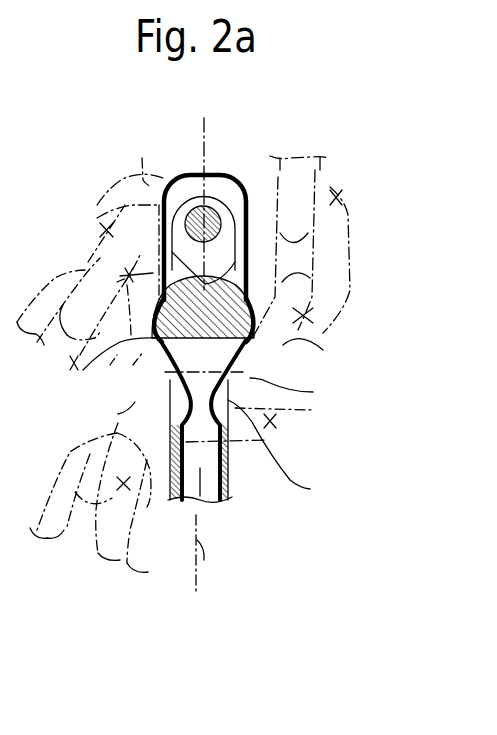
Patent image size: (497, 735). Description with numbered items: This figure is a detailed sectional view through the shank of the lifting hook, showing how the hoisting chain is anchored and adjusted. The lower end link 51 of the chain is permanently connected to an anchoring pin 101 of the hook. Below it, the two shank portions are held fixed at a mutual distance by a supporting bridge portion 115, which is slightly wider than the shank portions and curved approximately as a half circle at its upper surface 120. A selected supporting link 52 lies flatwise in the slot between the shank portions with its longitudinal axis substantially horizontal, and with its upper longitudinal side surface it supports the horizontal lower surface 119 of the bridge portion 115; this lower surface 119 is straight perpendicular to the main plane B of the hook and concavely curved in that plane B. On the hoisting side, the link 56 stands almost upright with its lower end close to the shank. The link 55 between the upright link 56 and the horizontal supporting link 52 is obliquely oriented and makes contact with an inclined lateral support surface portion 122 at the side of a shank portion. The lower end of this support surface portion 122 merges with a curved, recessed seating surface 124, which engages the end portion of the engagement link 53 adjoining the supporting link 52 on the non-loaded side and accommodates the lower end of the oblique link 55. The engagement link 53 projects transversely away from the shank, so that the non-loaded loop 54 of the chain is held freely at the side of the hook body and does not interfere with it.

The anchoring pin 101 is at (218, 176).
The upper surface 120 is at (164, 240).
The supporting bridge portion 115 is at (157, 318).
The lower surface 119 is at (268, 421).
The lower end link 51 is at (142, 156).
The link 56 is at (337, 175).
The link 55 is at (320, 337).
The inclined lateral support surface portion 122 is at (83, 370).
The recessed seating surface 124 is at (118, 414).
The supporting link 52 is at (275, 426).
The engagement link 53 is at (141, 514).
The non-loaded loop 54 is at (88, 553).
The main plane of the hook B is at (214, 572).